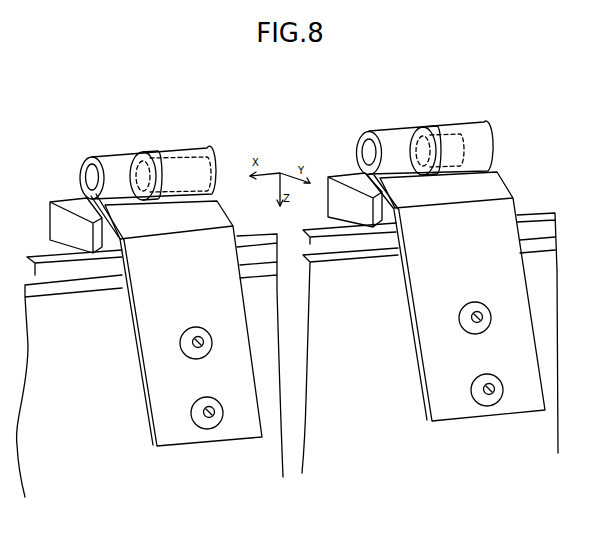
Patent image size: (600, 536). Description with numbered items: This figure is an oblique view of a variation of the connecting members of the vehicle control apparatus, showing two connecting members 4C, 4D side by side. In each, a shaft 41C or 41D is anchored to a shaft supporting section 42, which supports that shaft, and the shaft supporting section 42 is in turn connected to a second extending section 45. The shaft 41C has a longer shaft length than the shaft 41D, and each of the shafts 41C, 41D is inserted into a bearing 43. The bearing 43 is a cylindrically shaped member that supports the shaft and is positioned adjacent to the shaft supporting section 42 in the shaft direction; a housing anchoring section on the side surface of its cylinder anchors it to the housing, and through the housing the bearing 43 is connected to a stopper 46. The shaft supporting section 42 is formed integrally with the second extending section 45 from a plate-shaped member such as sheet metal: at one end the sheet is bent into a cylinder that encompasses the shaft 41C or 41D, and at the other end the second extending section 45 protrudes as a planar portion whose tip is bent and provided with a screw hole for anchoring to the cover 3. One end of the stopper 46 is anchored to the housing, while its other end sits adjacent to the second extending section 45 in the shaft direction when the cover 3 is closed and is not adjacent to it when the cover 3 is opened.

The cover 3 is at (253, 460).
The connecting member 4C is at (97, 139).
The connecting member 4D is at (372, 123).
The shaft 41C is at (155, 157).
The shaft 41D is at (433, 133).
The shaft supporting section 42 is at (117, 163).
The bearing 43 is at (187, 147).
The second extending section 45 is at (210, 217).
The stopper 46 is at (58, 217).